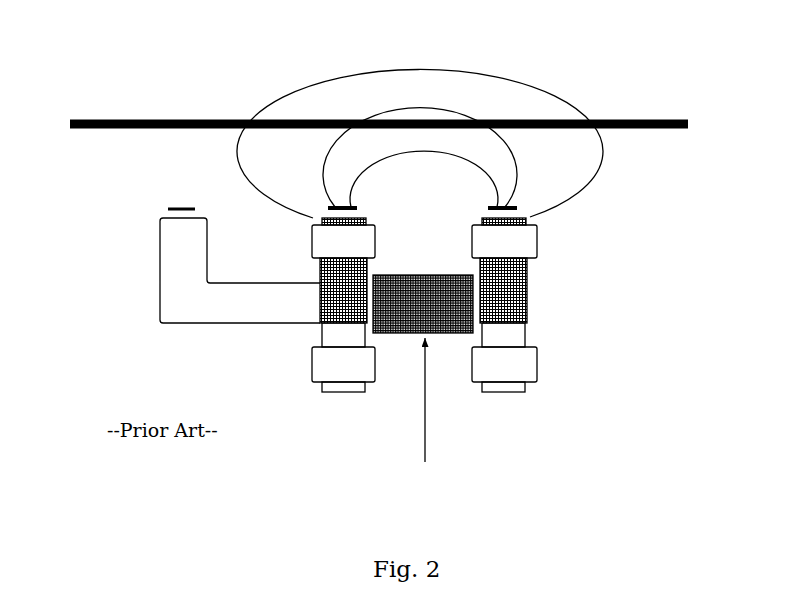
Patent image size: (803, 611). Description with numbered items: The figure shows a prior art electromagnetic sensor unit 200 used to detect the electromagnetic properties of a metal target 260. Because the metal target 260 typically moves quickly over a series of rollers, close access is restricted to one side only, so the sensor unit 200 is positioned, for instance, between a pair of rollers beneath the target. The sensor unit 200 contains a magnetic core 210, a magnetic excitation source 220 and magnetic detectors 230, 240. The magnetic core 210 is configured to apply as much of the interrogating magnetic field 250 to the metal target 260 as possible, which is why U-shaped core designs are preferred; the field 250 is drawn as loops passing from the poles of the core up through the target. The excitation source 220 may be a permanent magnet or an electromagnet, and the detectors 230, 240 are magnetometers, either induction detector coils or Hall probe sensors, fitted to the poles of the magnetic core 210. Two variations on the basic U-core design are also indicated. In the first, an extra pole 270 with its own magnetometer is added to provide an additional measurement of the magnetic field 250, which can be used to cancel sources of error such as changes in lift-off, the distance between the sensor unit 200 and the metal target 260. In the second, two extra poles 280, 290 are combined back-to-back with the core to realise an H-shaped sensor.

The sensor unit 200 is at (367, 266).
The magnetic core 210 is at (538, 301).
The magnetic excitation source 220 is at (427, 415).
The magnetic detector 230 is at (312, 250).
The magnetic detector 240 is at (368, 207).
The interrogating magnetic field 250 is at (420, 128).
The metal target 260 is at (356, 120).
The extra pole 270 is at (218, 266).
The extra pole 280 is at (343, 318).
The extra pole 290 is at (508, 318).